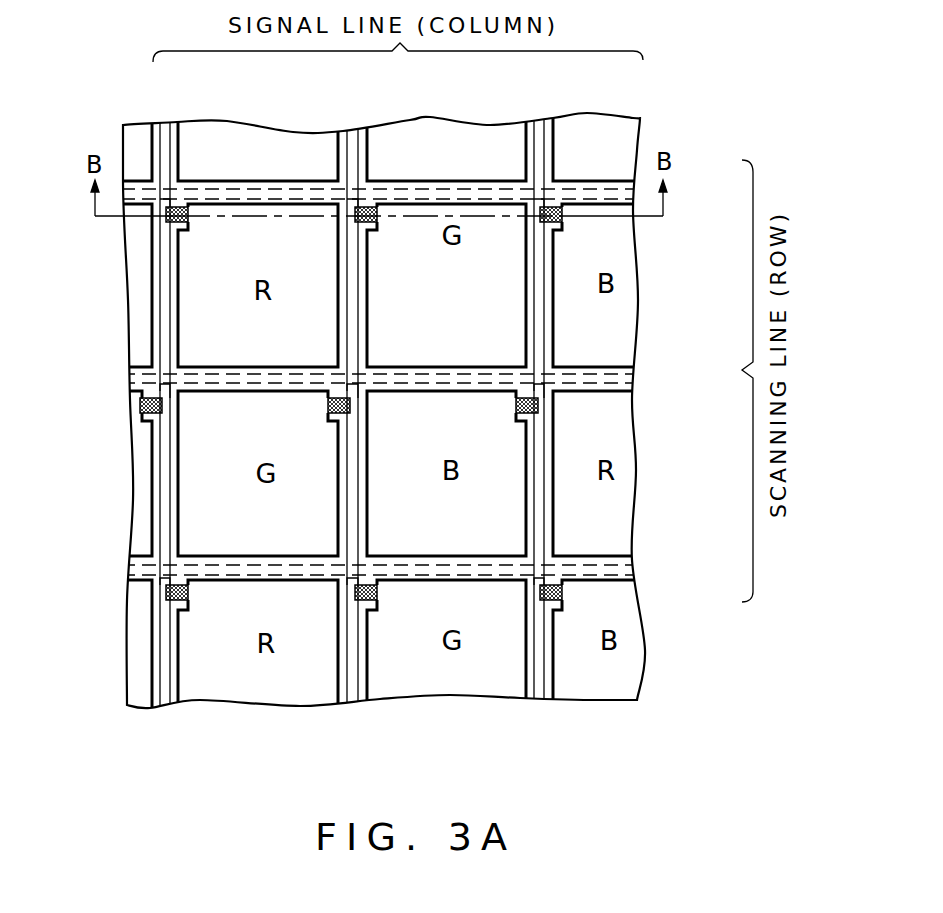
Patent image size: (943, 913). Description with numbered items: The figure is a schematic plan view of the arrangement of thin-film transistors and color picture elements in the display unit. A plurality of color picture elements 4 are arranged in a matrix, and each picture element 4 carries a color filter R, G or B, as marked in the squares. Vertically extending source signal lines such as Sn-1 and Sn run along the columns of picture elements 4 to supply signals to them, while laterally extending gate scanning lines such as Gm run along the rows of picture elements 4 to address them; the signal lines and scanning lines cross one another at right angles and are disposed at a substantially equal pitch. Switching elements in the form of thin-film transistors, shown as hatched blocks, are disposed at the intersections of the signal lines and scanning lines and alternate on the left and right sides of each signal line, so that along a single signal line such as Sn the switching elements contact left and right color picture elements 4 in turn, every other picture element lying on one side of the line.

The color picture element 4 is at (462, 341).
The source signal line Sn-1 is at (164, 120).
The source signal line Sn is at (351, 122).
The gate scanning line Gm is at (638, 191).